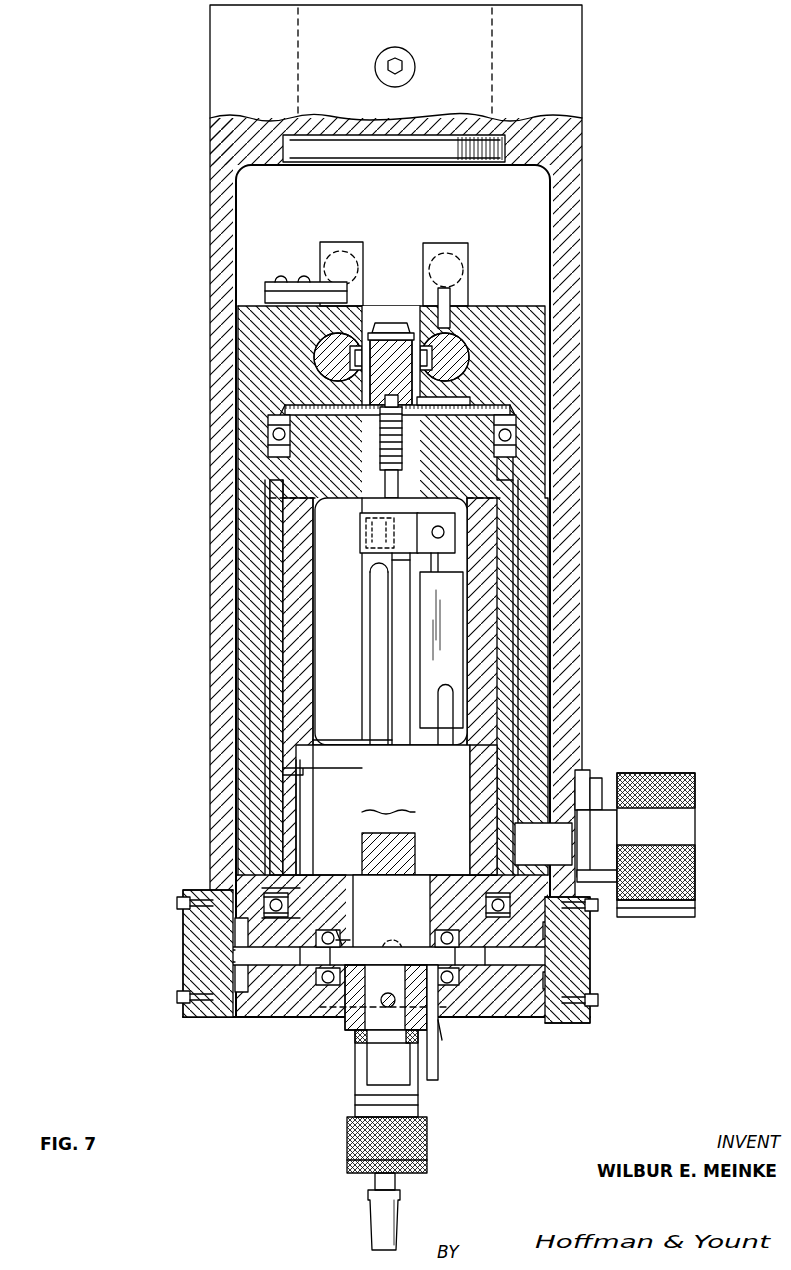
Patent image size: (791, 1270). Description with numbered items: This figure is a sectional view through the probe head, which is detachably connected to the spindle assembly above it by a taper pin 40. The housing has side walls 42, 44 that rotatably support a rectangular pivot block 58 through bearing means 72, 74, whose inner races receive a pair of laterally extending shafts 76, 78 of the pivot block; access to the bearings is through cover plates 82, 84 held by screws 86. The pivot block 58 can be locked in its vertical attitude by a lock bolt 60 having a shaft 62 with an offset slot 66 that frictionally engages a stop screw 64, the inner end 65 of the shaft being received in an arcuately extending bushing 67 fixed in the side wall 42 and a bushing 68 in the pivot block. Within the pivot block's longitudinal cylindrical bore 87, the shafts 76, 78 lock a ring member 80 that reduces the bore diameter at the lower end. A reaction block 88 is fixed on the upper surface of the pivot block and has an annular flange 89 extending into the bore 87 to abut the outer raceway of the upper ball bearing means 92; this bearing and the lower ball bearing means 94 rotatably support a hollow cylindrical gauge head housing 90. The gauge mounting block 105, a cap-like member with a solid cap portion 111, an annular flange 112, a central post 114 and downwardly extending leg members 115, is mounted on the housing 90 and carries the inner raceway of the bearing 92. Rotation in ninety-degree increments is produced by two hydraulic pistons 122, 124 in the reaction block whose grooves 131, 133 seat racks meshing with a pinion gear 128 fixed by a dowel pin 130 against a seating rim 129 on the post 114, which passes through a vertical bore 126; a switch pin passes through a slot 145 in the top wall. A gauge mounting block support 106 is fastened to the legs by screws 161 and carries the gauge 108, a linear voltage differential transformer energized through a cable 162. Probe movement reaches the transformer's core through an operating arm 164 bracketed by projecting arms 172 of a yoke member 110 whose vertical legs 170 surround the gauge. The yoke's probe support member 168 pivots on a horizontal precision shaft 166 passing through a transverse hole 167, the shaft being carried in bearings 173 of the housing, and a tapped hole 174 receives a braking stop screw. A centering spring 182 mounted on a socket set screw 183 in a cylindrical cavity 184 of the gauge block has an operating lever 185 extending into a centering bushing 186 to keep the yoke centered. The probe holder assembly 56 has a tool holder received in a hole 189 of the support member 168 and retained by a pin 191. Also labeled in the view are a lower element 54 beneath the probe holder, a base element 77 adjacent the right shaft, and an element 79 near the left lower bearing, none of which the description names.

The taper pin 40 is at (383, 63).
The side wall 42 is at (568, 636).
The side wall 44 is at (236, 540).
The connector tip 54 is at (380, 1222).
The probe holder assembly 56 is at (365, 1100).
The pivot block 58 is at (241, 995).
The lock bolt 60 is at (680, 835).
The shaft 62 is at (605, 882).
The stop screw 64 is at (600, 782).
The inner end 65 is at (543, 844).
The slot 66 is at (603, 838).
The arcuately extending bushing 67 is at (582, 770).
The bushing 68 is at (548, 770).
The bearing means 72 is at (590, 985).
The bearing means 74 is at (183, 920).
The laterally extending shaft 76 is at (490, 1005).
The base block 77 is at (520, 1010).
The laterally extending shaft 78 is at (240, 1000).
The bearing retainer 79 is at (280, 895).
The ring member 80 is at (298, 1000).
The cover plate 82 is at (578, 1023).
The cover plate 84 is at (208, 962).
The screw 86 is at (177, 1000).
The cylindrical bore 87 is at (516, 596).
The reaction block 88 is at (498, 320).
The annular flange 89 is at (310, 408).
The gauge head housing 90 is at (498, 797).
The upper ball bearing means 92 is at (270, 436).
The lower ball bearing means 94 is at (266, 900).
The gauge mounting block 105 is at (355, 500).
The gauge mounting block support 106 is at (338, 760).
The gauge 108 is at (316, 577).
The yoke member 110 is at (365, 812).
The solid cap portion 111 is at (268, 452).
The annular flange 112 is at (510, 458).
The cylindrical post 114 is at (380, 335).
The leg member 115 is at (520, 660).
The piston 122 is at (452, 350).
The piston 124 is at (328, 335).
The cylindrical bore 126 is at (402, 330).
The pinion gear 128 is at (370, 320).
The seating rim 129 is at (525, 374).
The dowel pin 130 is at (395, 335).
The slot 131 is at (440, 355).
The slot 133 is at (350, 358).
The slot 145 is at (452, 315).
The screw 161 is at (300, 770).
The cable 162 is at (450, 700).
The operating arm 164 is at (445, 560).
The precision shaft 166 is at (360, 945).
The transverse hole 167 is at (436, 1015).
The probe support member 168 is at (355, 1000).
The leg 170 is at (410, 636).
The projecting arm 172 is at (455, 530).
The bearing 173 is at (325, 925).
The tapped hole 174 is at (392, 940).
The centering spring 182 is at (404, 462).
The socket set screw 183 is at (445, 403).
The cylindrical cavity 184 is at (265, 480).
The operating lever 185 is at (400, 480).
The centering bushing 186 is at (380, 530).
The hole 189 is at (368, 1020).
The pin 191 is at (388, 990).